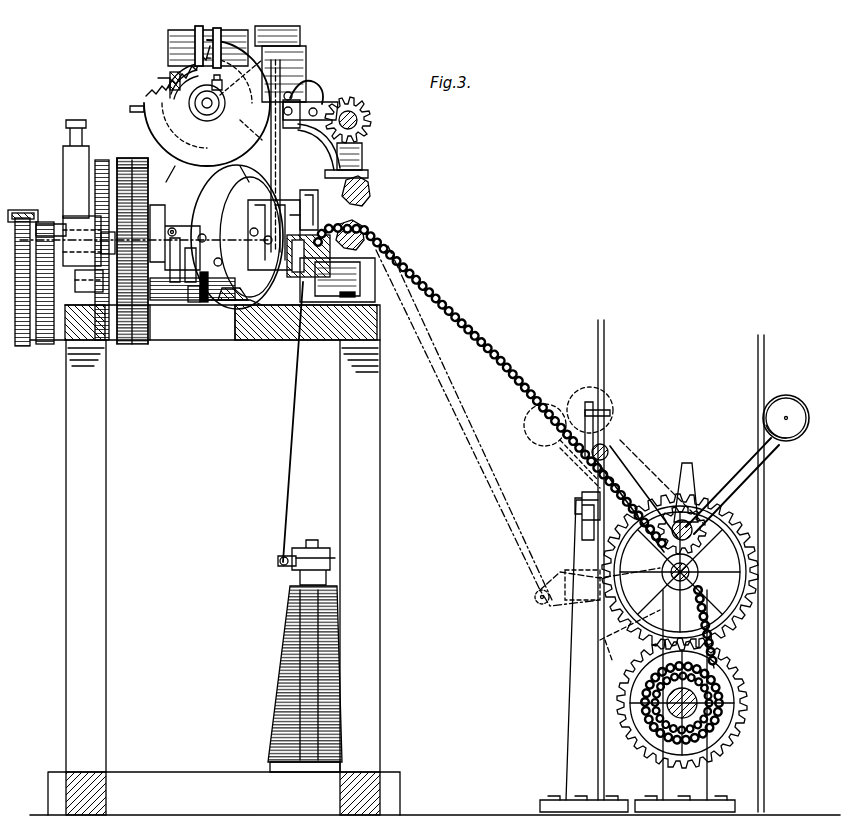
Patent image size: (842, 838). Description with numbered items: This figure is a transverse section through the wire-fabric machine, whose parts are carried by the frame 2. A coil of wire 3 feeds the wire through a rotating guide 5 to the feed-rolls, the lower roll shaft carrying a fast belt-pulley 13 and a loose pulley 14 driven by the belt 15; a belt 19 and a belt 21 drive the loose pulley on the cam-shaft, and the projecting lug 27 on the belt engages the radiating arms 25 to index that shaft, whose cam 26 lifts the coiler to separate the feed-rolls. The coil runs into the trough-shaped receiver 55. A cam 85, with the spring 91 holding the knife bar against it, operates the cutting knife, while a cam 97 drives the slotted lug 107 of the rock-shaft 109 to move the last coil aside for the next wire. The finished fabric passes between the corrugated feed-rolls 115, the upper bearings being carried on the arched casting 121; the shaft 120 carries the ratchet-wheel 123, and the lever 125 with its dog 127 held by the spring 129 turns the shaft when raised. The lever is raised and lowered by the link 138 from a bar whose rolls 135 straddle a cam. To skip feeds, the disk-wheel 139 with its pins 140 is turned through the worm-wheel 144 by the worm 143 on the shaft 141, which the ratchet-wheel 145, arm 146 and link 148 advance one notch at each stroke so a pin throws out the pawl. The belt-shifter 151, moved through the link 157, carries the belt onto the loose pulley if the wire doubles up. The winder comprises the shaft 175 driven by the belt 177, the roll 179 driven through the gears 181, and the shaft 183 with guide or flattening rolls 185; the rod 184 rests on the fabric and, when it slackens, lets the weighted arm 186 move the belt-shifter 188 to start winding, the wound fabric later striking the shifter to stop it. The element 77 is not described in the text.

The frame 2 is at (216, 338).
The coil of wire 3 is at (280, 676).
The rotating guide 5 is at (278, 562).
The belt-pulley 13 is at (20, 370).
The loose pulley 14 is at (40, 224).
The belt 15 is at (44, 344).
The belt 19 is at (140, 342).
The belt 21 is at (138, 160).
The radiating arms 25 is at (99, 250).
The cam 26 is at (238, 302).
The projecting lug 27 is at (116, 162).
The trough-shaped receiver 55 is at (337, 281).
The guide 77 is at (311, 210).
The cam 85 is at (274, 248).
The spring 91 is at (186, 272).
The cam 97 is at (308, 269).
The slotted lug 107 is at (186, 298).
The rock-shaft 109 is at (206, 304).
The corrugated feed-rolls 115 is at (366, 204).
The shaft 120 is at (366, 126).
The arched casting 121 is at (200, 182).
The ratchet-wheel 123 is at (366, 114).
The lever 125 is at (312, 142).
The dog 127 is at (326, 106).
The spring 129 is at (304, 94).
The rolls 135 is at (276, 336).
The link 138 is at (282, 176).
The disk-wheel 139 is at (207, 111).
The pins 140 is at (138, 112).
The shaft 141 is at (200, 28).
The worm 143 is at (219, 40).
The worm-wheel 144 is at (176, 82).
The ratchet-wheel 145 is at (258, 30).
The arm 146 is at (280, 46).
The link 148 is at (221, 82).
The belt-shifter 151 is at (60, 230).
The link 157 is at (188, 242).
The shaft 175 is at (690, 586).
The belt 177 is at (604, 382).
The roll 179 is at (684, 744).
The gears 181 is at (752, 566).
The shaft 183 is at (690, 514).
The rod 184 is at (608, 462).
The guide or flattening rolls 185 is at (672, 510).
The weighted arm 186 is at (746, 466).
The belt-shifter 188 is at (584, 404).